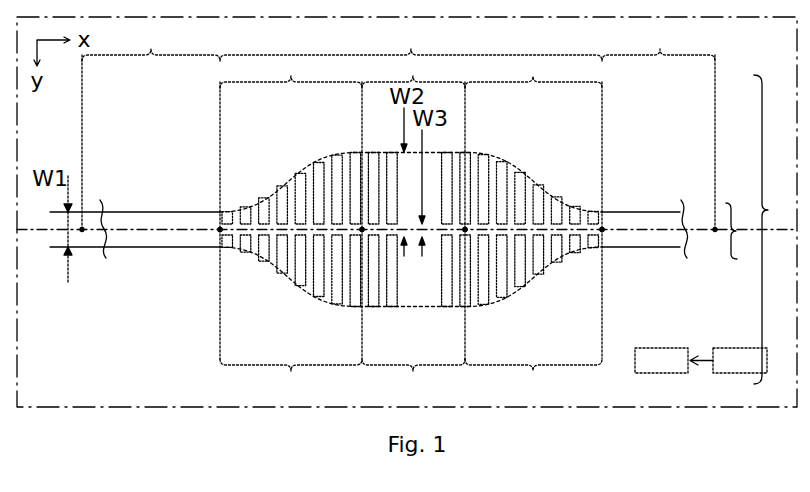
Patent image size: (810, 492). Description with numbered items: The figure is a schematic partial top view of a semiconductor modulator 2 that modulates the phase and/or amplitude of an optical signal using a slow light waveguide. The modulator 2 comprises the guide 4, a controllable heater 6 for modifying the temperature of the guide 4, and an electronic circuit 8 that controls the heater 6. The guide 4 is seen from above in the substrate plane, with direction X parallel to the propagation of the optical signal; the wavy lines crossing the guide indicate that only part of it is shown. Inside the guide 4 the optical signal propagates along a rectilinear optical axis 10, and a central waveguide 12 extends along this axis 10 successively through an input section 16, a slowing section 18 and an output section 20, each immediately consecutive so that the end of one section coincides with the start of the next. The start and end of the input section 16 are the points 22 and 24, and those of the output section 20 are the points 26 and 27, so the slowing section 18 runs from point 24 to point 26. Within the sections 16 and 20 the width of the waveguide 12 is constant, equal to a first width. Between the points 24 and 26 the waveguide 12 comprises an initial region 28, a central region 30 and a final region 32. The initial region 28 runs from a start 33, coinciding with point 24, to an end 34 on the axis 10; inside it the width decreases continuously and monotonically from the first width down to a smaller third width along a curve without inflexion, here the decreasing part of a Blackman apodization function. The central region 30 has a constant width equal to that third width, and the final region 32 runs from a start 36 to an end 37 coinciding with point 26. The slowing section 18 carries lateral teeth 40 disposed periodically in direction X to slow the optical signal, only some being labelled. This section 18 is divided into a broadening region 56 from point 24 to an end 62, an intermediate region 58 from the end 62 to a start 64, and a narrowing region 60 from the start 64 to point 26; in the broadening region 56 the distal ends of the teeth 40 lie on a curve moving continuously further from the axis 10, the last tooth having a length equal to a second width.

The semiconductor modulator 2 is at (657, 419).
The guide 4 is at (775, 229).
The controllable heater 6 is at (661, 360).
The electronic circuit 8 is at (728, 360).
The optical axis 10 is at (33, 230).
The central waveguide 12 is at (682, 237).
The input section 16 is at (151, 127).
The slowing section 18 is at (411, 192).
The output section 20 is at (658, 127).
The start of input section 22 is at (82, 232).
The end of input section 24 is at (220, 212).
The start of output section 26 is at (602, 229).
The end of output section 27 is at (714, 232).
The initial region 28 is at (291, 379).
The central region 30 is at (413, 379).
The final region 32 is at (533, 379).
The start of initial region 33 is at (220, 247).
The end of initial region 34 is at (360, 231).
The start of final region 36 is at (467, 231).
The end of final region 37 is at (602, 230).
The lateral teeth 40 is at (372, 153).
The broadening region 56 is at (291, 207).
The intermediate region 58 is at (413, 207).
The narrowing region 60 is at (533, 71).
The end of broadening region 62 is at (360, 228).
The start of narrowing region 64 is at (463, 231).